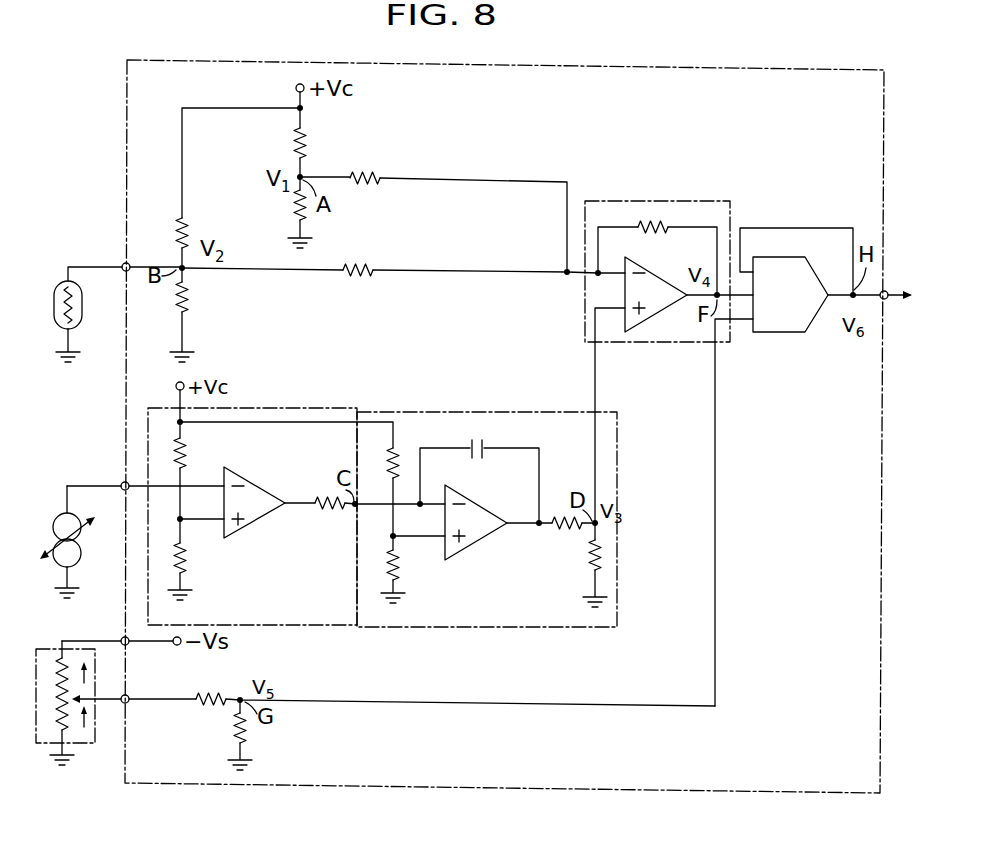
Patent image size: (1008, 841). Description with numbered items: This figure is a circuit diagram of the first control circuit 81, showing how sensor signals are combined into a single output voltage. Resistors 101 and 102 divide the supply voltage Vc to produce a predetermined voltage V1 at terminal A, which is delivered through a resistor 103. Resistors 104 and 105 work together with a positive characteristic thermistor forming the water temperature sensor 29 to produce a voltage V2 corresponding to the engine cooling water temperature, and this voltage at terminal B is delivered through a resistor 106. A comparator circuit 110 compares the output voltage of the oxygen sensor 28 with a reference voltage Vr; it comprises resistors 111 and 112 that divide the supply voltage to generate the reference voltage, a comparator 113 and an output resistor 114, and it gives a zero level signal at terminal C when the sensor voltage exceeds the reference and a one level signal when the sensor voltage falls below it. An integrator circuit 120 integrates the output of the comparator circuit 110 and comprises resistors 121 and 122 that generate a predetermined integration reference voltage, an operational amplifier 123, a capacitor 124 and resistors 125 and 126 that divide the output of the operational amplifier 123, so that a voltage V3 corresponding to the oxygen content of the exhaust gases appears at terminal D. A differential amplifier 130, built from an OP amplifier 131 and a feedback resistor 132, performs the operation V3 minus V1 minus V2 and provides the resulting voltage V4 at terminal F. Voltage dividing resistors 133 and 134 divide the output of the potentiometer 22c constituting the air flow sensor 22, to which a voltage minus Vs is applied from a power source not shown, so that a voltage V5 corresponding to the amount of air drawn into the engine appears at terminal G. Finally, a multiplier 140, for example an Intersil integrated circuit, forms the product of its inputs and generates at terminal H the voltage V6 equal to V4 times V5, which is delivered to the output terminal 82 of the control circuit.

The first control circuit 81 is at (128, 130).
The output terminal 82 is at (913, 293).
The air flow sensor 22 is at (54, 648).
The potentiometer 22c is at (57, 727).
The oxygen sensor 28 is at (84, 538).
The water temperature sensor 29 is at (56, 288).
The resistor 101 is at (306, 136).
The resistor 102 is at (294, 206).
The resistor 103 is at (371, 174).
The resistor 104 is at (202, 228).
The resistor 105 is at (186, 299).
The resistor 106 is at (356, 280).
The comparator circuit 110 is at (264, 408).
The resistor 111 is at (186, 462).
The resistor 112 is at (187, 558).
The comparator 113 is at (252, 484).
The output resistor 114 is at (319, 510).
The integrator circuit 120 is at (548, 408).
The resistor 121 is at (398, 456).
The resistor 122 is at (399, 562).
The operational amplifier 123 is at (466, 499).
The capacitor 124 is at (478, 440).
The resistor 125 is at (566, 528).
The resistor 126 is at (586, 568).
The differential amplifier 130 is at (712, 228).
The OP amplifier 131 is at (657, 334).
The feedback resistor 132 is at (650, 232).
The voltage dividing resistor 133 is at (205, 672).
The voltage dividing resistor 134 is at (248, 741).
The multiplier 140 is at (814, 336).